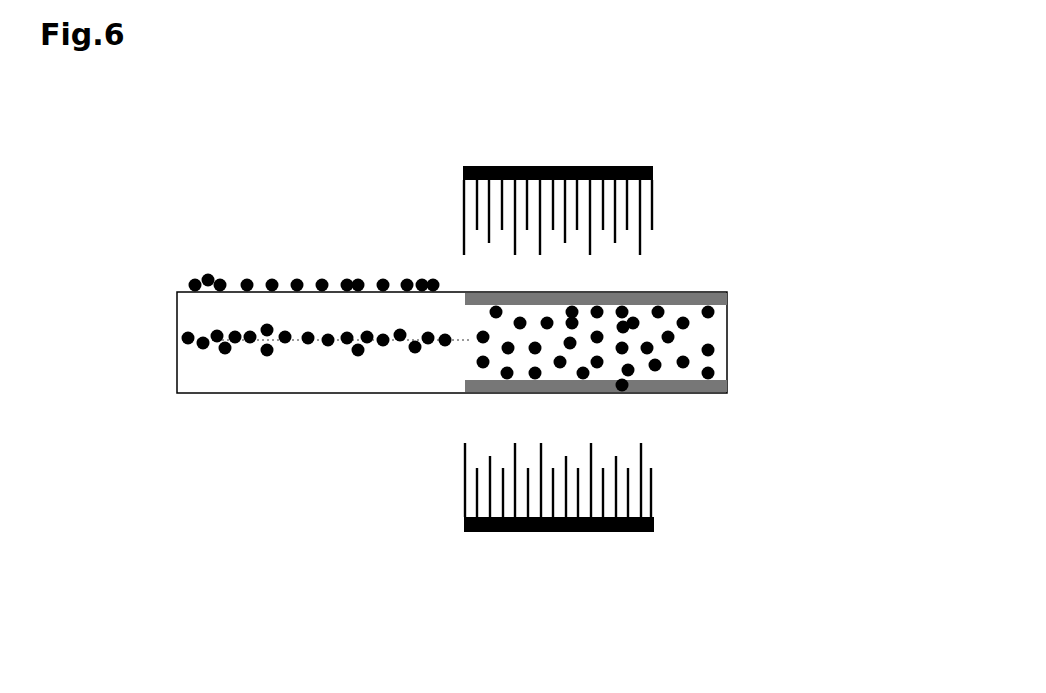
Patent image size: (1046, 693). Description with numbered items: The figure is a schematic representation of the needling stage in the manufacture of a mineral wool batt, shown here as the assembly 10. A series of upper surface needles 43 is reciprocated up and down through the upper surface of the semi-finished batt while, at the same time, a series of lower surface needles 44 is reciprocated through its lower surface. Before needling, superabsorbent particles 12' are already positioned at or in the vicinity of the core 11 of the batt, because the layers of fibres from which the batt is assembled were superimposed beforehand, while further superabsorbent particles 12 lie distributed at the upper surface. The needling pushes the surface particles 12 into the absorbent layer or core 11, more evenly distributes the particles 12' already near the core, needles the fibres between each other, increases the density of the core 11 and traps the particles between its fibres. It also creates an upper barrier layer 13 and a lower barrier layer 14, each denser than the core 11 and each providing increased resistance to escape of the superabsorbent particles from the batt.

The electrode assembly 10 is at (748, 394).
The core 11 is at (693, 342).
The superabsorbent particles 12 is at (314, 237).
The superabsorbent particles 12' is at (300, 396).
The upper barrier layer 13 is at (703, 288).
The lower barrier layer 14 is at (703, 393).
The upper surface needles 43 is at (644, 167).
The lower surface needles 44 is at (477, 533).